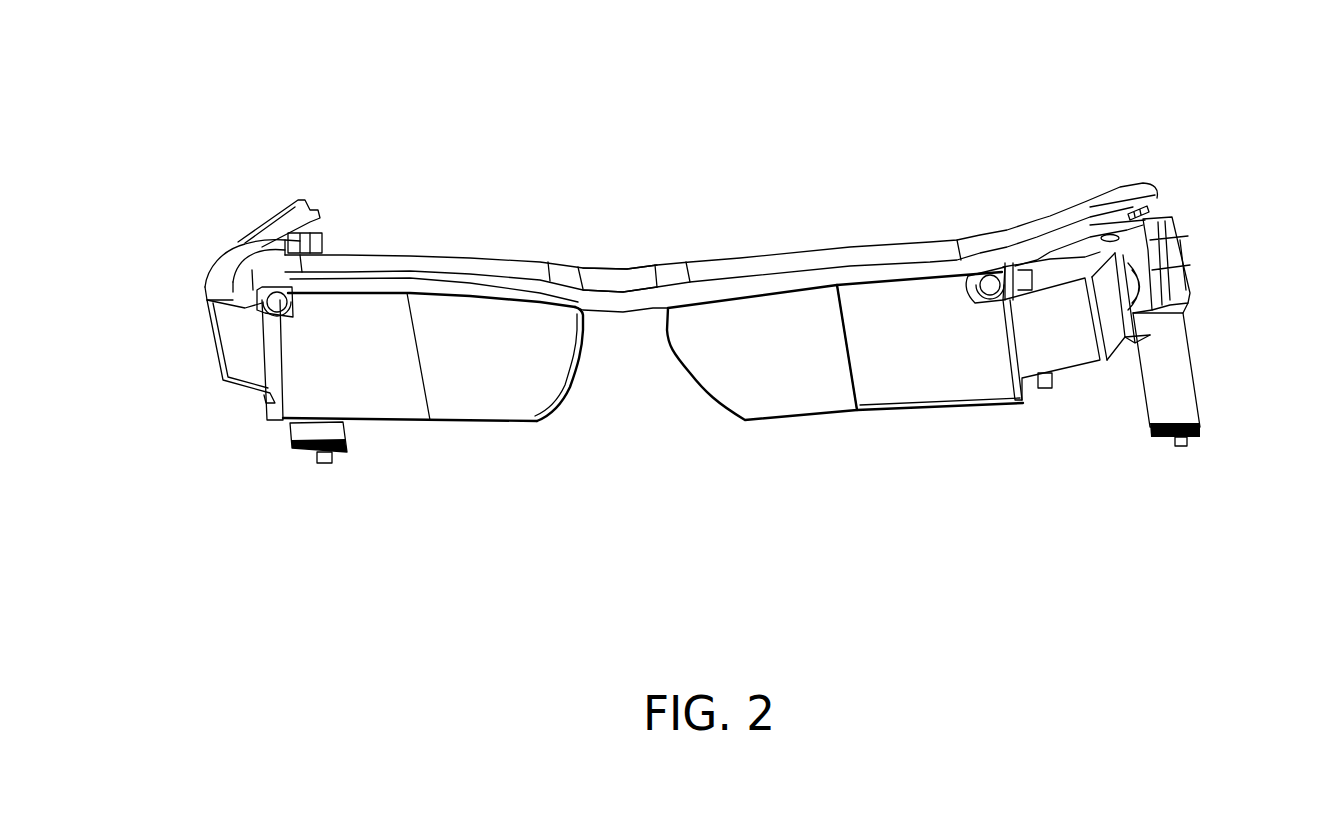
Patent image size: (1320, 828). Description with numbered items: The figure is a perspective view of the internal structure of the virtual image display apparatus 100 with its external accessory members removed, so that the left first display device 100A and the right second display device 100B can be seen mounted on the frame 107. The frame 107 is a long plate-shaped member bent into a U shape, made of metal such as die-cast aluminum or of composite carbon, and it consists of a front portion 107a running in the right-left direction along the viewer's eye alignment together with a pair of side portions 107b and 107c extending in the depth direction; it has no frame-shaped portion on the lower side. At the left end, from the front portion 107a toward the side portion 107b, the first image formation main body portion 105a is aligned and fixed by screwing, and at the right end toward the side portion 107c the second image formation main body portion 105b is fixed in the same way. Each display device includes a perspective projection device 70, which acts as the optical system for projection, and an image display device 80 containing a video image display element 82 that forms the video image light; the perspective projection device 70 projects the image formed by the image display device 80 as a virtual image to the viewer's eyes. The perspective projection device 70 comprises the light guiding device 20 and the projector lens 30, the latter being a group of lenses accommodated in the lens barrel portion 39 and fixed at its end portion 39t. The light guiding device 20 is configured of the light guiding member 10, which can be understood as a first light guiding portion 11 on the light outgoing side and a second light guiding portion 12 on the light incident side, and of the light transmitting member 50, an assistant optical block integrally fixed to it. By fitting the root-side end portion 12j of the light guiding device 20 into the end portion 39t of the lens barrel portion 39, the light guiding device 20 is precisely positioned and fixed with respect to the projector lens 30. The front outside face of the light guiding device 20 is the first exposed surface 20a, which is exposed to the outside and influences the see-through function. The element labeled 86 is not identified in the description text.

The virtual image display apparatus 100 is at (1186, 106).
The first display device 100A is at (476, 166).
The second display device 100B is at (921, 180).
The first image formation main body portion 105a is at (178, 216).
The second image formation main body portion 105b is at (1223, 475).
The frame 107 is at (730, 268).
The front portion 107a is at (628, 283).
The side portion 107b is at (282, 205).
The side portion 107c is at (1103, 205).
The light guiding member 10 is at (370, 313).
The light guiding device 20 is at (360, 400).
The first exposed surface 20a is at (513, 398).
The light transmitting member 50 is at (493, 410).
The projector lens 30 is at (245, 387).
The first light guiding portion 11 is at (303, 387).
The second light guiding portion 12 is at (237, 387).
The end portion 12j is at (235, 350).
The lens barrel portion 39 is at (228, 273).
The end portion 39t is at (207, 292).
The perspective projection device 70 is at (403, 540).
The image display device 80 is at (328, 226).
The video image display element 82 is at (320, 253).
The attachment portion 86 is at (323, 240).